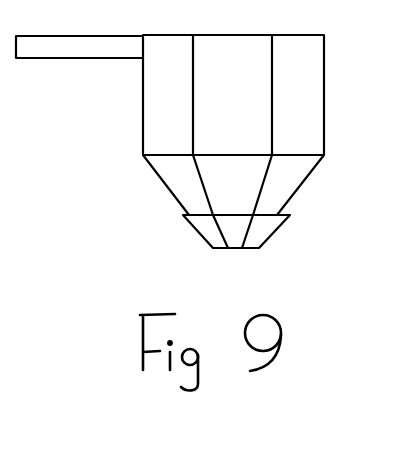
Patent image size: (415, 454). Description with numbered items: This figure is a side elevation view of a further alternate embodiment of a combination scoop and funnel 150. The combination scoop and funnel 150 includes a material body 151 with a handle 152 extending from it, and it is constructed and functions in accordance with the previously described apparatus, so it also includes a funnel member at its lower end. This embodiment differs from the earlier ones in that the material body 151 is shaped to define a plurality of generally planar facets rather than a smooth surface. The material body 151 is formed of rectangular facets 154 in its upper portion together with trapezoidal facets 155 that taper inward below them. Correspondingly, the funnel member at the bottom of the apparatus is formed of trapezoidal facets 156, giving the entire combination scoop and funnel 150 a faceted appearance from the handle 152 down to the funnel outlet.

The combination scoop and funnel 150 is at (200, 159).
The material body 151 is at (333, 150).
The handle 152 is at (55, 62).
The rectangular facets 154 is at (292, 88).
The trapezoidal facets 155 is at (278, 190).
The trapezoidal facets 156 is at (202, 249).